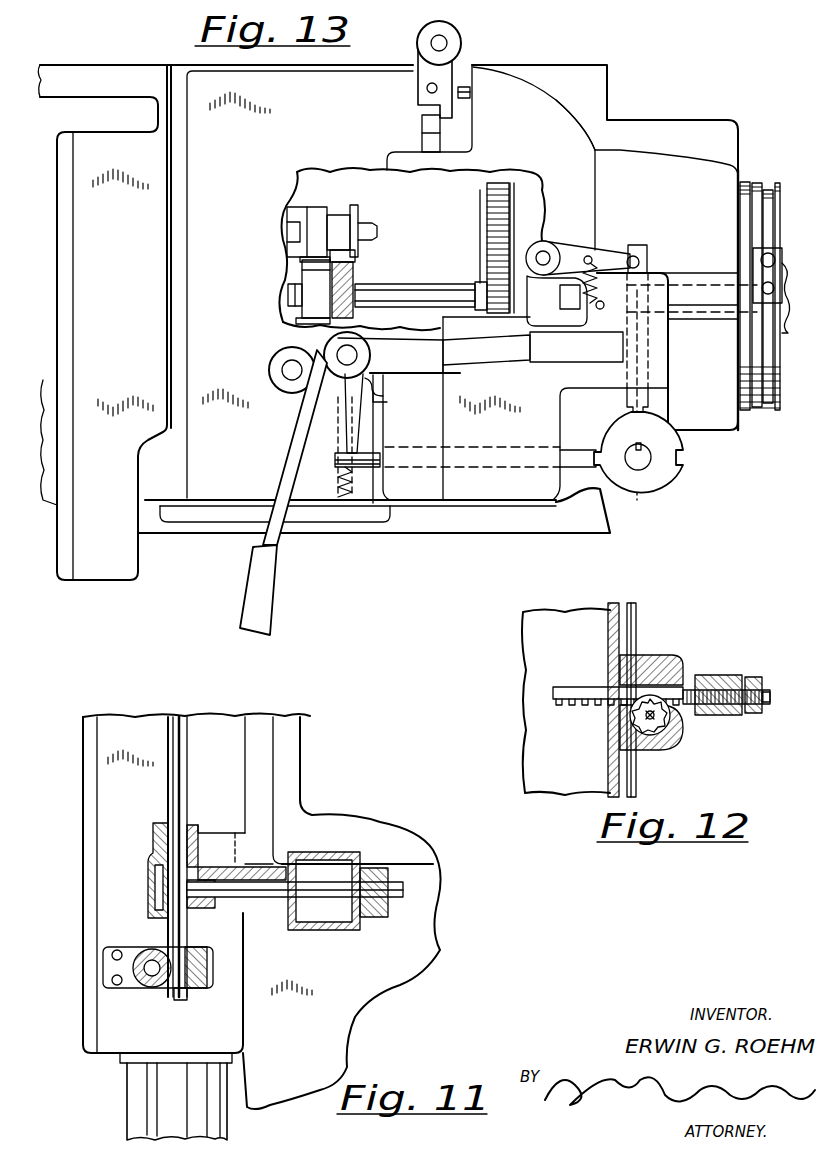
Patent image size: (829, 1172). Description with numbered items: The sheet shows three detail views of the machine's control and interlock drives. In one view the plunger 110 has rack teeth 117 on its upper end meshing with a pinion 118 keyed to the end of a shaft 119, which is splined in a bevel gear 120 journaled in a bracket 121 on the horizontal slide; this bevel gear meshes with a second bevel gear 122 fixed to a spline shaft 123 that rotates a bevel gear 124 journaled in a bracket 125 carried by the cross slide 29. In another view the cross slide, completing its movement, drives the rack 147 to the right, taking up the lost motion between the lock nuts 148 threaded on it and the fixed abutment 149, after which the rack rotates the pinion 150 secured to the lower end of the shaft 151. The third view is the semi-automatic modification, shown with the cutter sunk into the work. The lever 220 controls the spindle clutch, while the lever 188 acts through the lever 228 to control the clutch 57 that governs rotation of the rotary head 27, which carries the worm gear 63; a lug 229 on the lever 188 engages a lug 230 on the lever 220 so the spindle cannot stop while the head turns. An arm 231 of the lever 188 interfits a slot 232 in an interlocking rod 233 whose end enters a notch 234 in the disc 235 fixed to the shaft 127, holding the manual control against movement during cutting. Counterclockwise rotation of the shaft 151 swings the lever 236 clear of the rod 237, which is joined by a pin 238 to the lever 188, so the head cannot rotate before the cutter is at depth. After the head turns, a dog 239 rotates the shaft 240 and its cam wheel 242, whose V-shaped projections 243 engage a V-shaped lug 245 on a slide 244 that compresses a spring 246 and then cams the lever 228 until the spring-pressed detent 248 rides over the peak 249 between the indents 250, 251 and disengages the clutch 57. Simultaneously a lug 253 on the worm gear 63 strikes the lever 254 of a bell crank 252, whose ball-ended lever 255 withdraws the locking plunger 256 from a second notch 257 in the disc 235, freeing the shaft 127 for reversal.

In FIG. 13, the shaft 151 is at (447, 43).
In FIG. 12, the shaft 151 is at (650, 725).
In FIG. 13, the lever 236 is at (452, 86).
In FIG. 13, the rod 237 is at (422, 133).
In FIG. 13, the worm gear 63 is at (497, 183).
In FIG. 13, the rotary head 27 is at (752, 192).
In FIG. 13, the dog 239 is at (778, 270).
In FIG. 13, the shaft 240 is at (726, 272).
In FIG. 13, the clutch 57 is at (353, 212).
In FIG. 13, the cam wheel 242 is at (302, 276).
In FIG. 13, the V-shaped projections 243 is at (300, 262).
In FIG. 13, the V-shaped lug 245 is at (296, 321).
In FIG. 13, the lever 228 is at (342, 262).
In FIG. 13, the slide 244 is at (348, 282).
In FIG. 13, the spring 246 is at (362, 290).
In FIG. 13, the lug 253 is at (484, 290).
In FIG. 13, the lug 229 is at (322, 352).
In FIG. 13, the lug 230 is at (268, 360).
In FIG. 13, the indent 250 is at (368, 380).
In FIG. 13, the pin 238 is at (455, 362).
In FIG. 13, the lever 188 is at (510, 360).
In FIG. 13, the spring-pressed detent 248 is at (342, 430).
In FIG. 13, the peak 249 is at (384, 392).
In FIG. 13, the indent 251 is at (387, 402).
In FIG. 13, the arm 231 is at (384, 429).
In FIG. 13, the slot 232 is at (362, 470).
In FIG. 13, the interlocking rod 233 is at (472, 449).
In FIG. 13, the notch 234 is at (596, 450).
In FIG. 13, the second notch 257 is at (650, 412).
In FIG. 13, the disc 235 is at (672, 500).
In FIG. 13, the shaft 127 is at (652, 465).
In FIG. 13, the bell crank 252 is at (554, 255).
In FIG. 13, the ball-ended lever 255 is at (606, 260).
In FIG. 13, the locking plunger 256 is at (647, 260).
In FIG. 13, the lever 254 is at (552, 320).
In FIG. 13, the lever 220 is at (270, 566).
In FIG. 12, the cross slide 29 is at (567, 790).
In FIG. 11, the cross slide 29 is at (398, 830).
In FIG. 12, the rack 147 is at (560, 704).
In FIG. 12, the lock nuts 148 is at (705, 680).
In FIG. 12, the fixed abutment 149 is at (738, 680).
In FIG. 12, the pinion 150 is at (650, 733).
In FIG. 11, the shaft 119 is at (183, 752).
In FIG. 11, the bevel gear 120 is at (191, 825).
In FIG. 11, the bracket 121 is at (152, 872).
In FIG. 11, the second bevel gear 122 is at (205, 908).
In FIG. 11, the spline shaft 123 is at (270, 897).
In FIG. 11, the bevel gear 124 is at (330, 930).
In FIG. 11, the bracket 125 is at (372, 925).
In FIG. 11, the plunger 110 is at (145, 988).
In FIG. 11, the rack teeth 117 is at (156, 985).
In FIG. 11, the pinion 118 is at (212, 978).